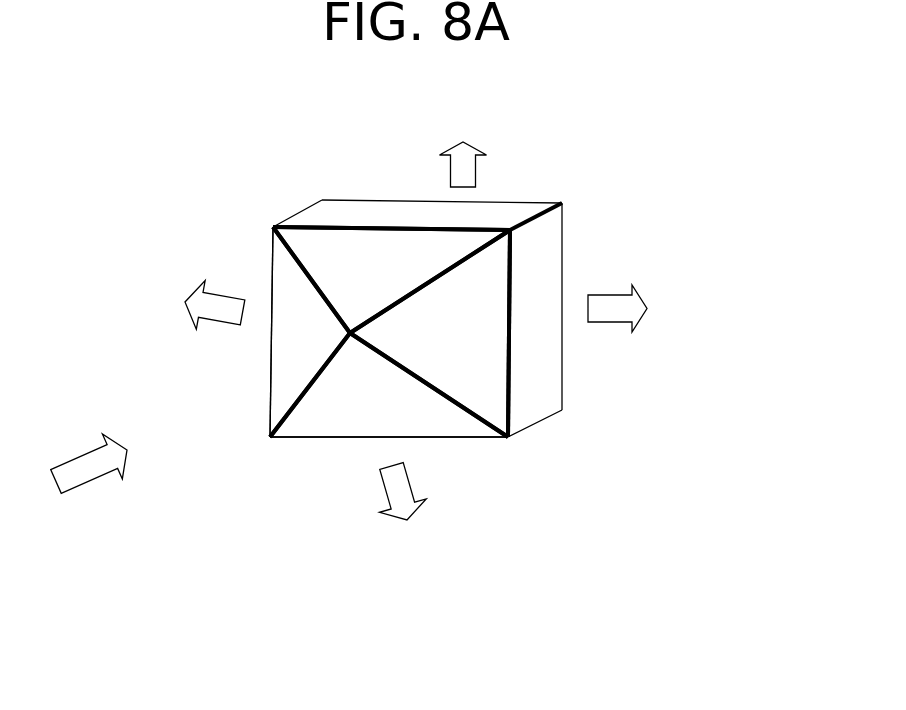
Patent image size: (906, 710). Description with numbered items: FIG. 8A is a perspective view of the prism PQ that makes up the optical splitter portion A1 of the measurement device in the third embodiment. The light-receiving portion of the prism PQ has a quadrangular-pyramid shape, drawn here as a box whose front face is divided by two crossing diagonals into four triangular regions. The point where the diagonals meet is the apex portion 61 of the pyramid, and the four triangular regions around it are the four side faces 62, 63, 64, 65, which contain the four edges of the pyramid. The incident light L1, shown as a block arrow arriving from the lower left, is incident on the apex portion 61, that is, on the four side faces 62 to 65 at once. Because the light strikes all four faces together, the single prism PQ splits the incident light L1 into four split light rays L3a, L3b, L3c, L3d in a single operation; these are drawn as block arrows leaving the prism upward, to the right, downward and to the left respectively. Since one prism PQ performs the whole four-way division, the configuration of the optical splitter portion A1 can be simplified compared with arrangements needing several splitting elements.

The apex portion 61 is at (348, 313).
The side face 62 is at (292, 357).
The side face 63 is at (435, 332).
The side face 64 is at (372, 263).
The side face 65 is at (360, 400).
The incident light L1 is at (78, 452).
The split light ray L3a is at (472, 150).
The split light ray L3b is at (640, 290).
The split light ray L3c is at (408, 480).
The split light ray L3d is at (200, 290).
The prism PQ is at (257, 482).
The optical splitter portion A1 is at (730, 148).